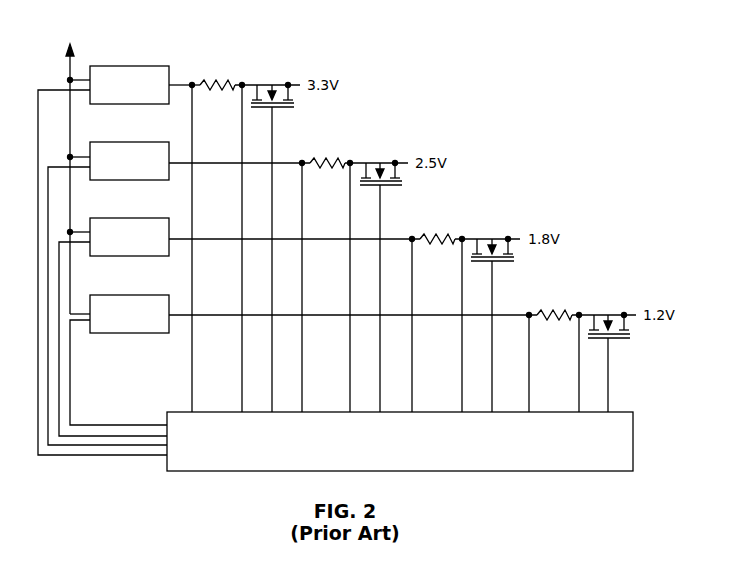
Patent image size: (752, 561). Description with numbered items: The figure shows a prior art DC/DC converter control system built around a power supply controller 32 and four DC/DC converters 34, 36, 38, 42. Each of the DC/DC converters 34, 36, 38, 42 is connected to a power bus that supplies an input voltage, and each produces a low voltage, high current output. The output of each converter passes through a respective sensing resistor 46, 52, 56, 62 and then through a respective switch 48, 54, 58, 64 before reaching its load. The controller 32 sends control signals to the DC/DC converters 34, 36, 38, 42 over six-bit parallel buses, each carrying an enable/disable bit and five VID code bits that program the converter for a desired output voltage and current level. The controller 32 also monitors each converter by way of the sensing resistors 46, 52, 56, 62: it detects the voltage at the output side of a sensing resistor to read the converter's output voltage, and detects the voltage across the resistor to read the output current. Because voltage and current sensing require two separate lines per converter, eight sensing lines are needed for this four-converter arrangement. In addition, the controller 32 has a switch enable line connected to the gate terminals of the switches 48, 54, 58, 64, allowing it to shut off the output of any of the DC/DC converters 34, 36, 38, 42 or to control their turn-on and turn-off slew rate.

The power supply controller 32 is at (633, 444).
The DC/DC converter 34 is at (130, 66).
The DC/DC converter 36 is at (130, 142).
The DC/DC converter 38 is at (130, 218).
The DC/DC converter 42 is at (130, 295).
The sensing resistor 46 is at (221, 92).
The switch 48 is at (294, 107).
The sensing resistor 52 is at (329, 170).
The switch 54 is at (402, 185).
The sensing resistor 56 is at (438, 247).
The switch 58 is at (514, 261).
The sensing resistor 62 is at (552, 323).
The switch 64 is at (630, 338).